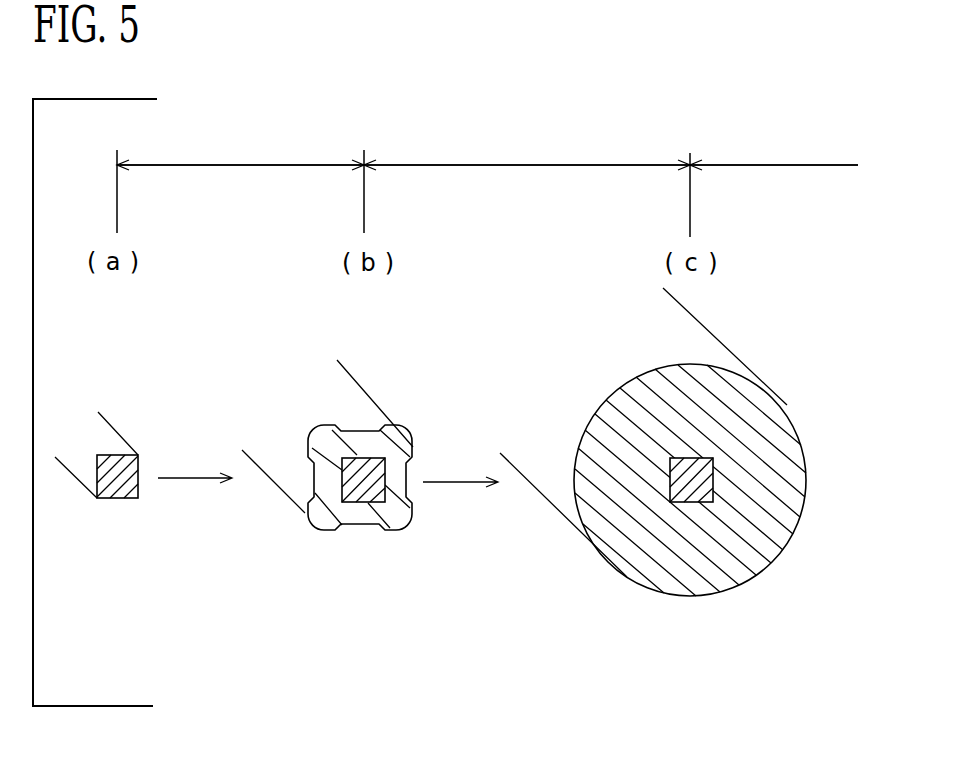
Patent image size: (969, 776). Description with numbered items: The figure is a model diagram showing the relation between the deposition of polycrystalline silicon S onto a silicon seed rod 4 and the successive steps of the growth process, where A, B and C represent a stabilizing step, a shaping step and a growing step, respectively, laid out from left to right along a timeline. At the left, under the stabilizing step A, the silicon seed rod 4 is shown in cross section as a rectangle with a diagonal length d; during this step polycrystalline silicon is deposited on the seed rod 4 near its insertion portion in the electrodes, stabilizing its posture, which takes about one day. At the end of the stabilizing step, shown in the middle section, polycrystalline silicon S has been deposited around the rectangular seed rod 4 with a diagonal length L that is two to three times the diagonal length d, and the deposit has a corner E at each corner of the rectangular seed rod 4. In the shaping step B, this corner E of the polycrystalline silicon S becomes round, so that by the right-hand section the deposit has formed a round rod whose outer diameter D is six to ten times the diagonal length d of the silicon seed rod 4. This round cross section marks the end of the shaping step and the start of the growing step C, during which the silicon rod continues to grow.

The silicon seed rod 4 is at (123, 498).
The polycrystalline silicon S is at (398, 515).
The corner E is at (410, 448).
The diagonal length d is at (62, 459).
The diagonal length L is at (255, 458).
The outer diameter D is at (510, 465).
The stabilizing step A is at (240, 149).
The shaping step B is at (527, 149).
The growing step C is at (774, 149).